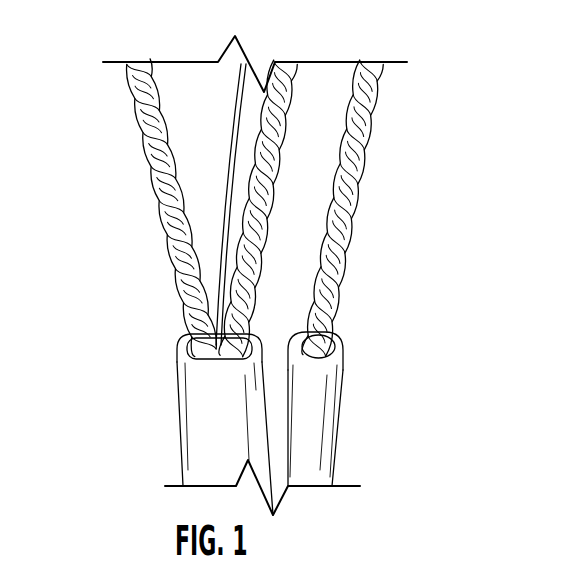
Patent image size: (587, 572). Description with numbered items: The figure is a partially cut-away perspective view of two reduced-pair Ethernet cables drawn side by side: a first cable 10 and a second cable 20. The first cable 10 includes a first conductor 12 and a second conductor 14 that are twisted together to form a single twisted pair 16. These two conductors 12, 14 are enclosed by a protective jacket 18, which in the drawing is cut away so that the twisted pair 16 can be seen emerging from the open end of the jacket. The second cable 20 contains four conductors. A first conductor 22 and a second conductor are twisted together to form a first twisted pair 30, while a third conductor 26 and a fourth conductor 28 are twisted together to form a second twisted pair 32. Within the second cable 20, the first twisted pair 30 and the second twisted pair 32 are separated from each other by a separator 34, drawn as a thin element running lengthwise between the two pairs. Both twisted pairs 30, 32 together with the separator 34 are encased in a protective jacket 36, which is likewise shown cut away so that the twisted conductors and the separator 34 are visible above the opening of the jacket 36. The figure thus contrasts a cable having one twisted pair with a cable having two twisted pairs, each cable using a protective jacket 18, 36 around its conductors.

The first cable 10 is at (383, 322).
The first conductor 12 is at (360, 147).
The second conductor 14 is at (377, 104).
The single twisted pair 16 is at (383, 232).
The protective jacket 18 is at (323, 435).
The second cable 20 is at (127, 322).
The first conductor 22 is at (137, 114).
The third conductor 26 is at (267, 102).
The fourth conductor 28 is at (275, 70).
The first twisted pair 30 is at (123, 145).
The second twisted pair 32 is at (293, 157).
The separator 34 is at (223, 215).
The protective jacket 36 is at (197, 403).